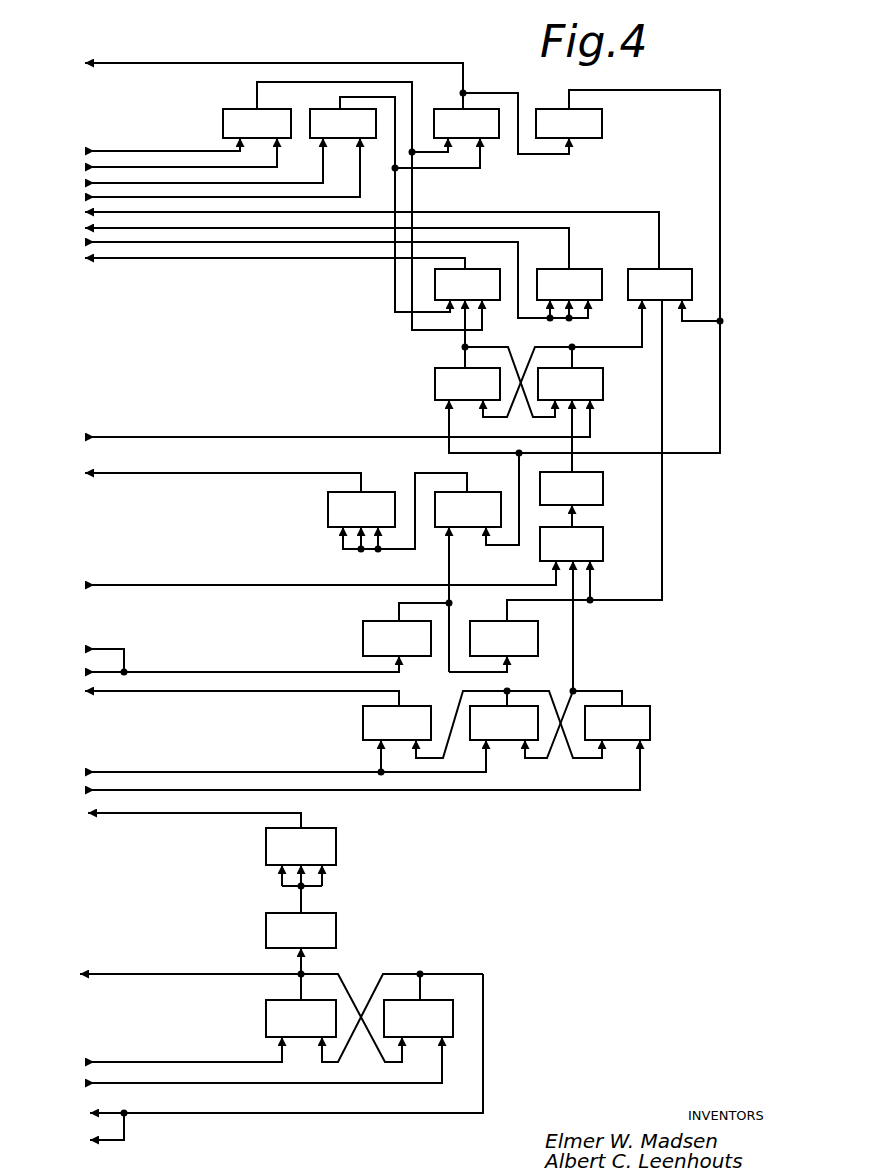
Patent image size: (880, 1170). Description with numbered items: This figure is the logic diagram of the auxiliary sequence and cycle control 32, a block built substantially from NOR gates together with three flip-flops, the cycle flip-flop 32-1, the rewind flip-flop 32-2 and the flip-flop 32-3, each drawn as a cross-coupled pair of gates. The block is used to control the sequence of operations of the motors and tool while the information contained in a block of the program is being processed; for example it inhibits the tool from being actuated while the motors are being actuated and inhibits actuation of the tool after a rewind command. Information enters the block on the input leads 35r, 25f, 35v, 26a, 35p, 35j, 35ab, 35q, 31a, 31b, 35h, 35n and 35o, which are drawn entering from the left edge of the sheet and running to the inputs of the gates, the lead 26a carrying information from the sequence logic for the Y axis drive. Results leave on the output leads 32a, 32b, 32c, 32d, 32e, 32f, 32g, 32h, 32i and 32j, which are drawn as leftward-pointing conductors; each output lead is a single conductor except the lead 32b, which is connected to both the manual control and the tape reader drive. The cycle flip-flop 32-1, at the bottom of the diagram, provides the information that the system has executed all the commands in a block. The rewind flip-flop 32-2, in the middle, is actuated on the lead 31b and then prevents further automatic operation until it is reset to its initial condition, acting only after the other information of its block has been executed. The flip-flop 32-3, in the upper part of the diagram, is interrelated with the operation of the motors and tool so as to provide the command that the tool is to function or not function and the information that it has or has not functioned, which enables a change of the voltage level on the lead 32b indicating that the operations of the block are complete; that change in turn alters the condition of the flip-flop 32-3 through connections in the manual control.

The auxiliary sequence and cycle control 32 is at (748, 77).
The cycle flip-flop 32-1 is at (396, 948).
The rewind flip-flop 32-2 is at (606, 681).
The flip-flop 32-3 is at (425, 371).
The output lead 32a is at (250, 73).
The output lead 32b is at (82, 212).
The output lead 32c is at (300, 244).
The output lead 32d is at (83, 258).
The output lead 32e is at (194, 479).
The output lead 32f is at (84, 692).
The output lead 32g is at (92, 816).
The output lead 32h is at (85, 1114).
The output lead 32i is at (88, 1142).
The output lead 32j is at (164, 979).
The input lead 35r is at (90, 149).
The input lead 25f is at (99, 165).
The input lead 35v is at (83, 183).
The input lead 26a is at (83, 197).
The input lead 35p is at (108, 244).
The input lead 35j is at (309, 424).
The input lead 35ab is at (288, 577).
The input lead 35q is at (85, 649).
The input lead 31a is at (83, 672).
The input lead 31b is at (83, 771).
The input lead 35h is at (83, 790).
The input lead 35n is at (83, 1062).
The input lead 35o is at (83, 1083).